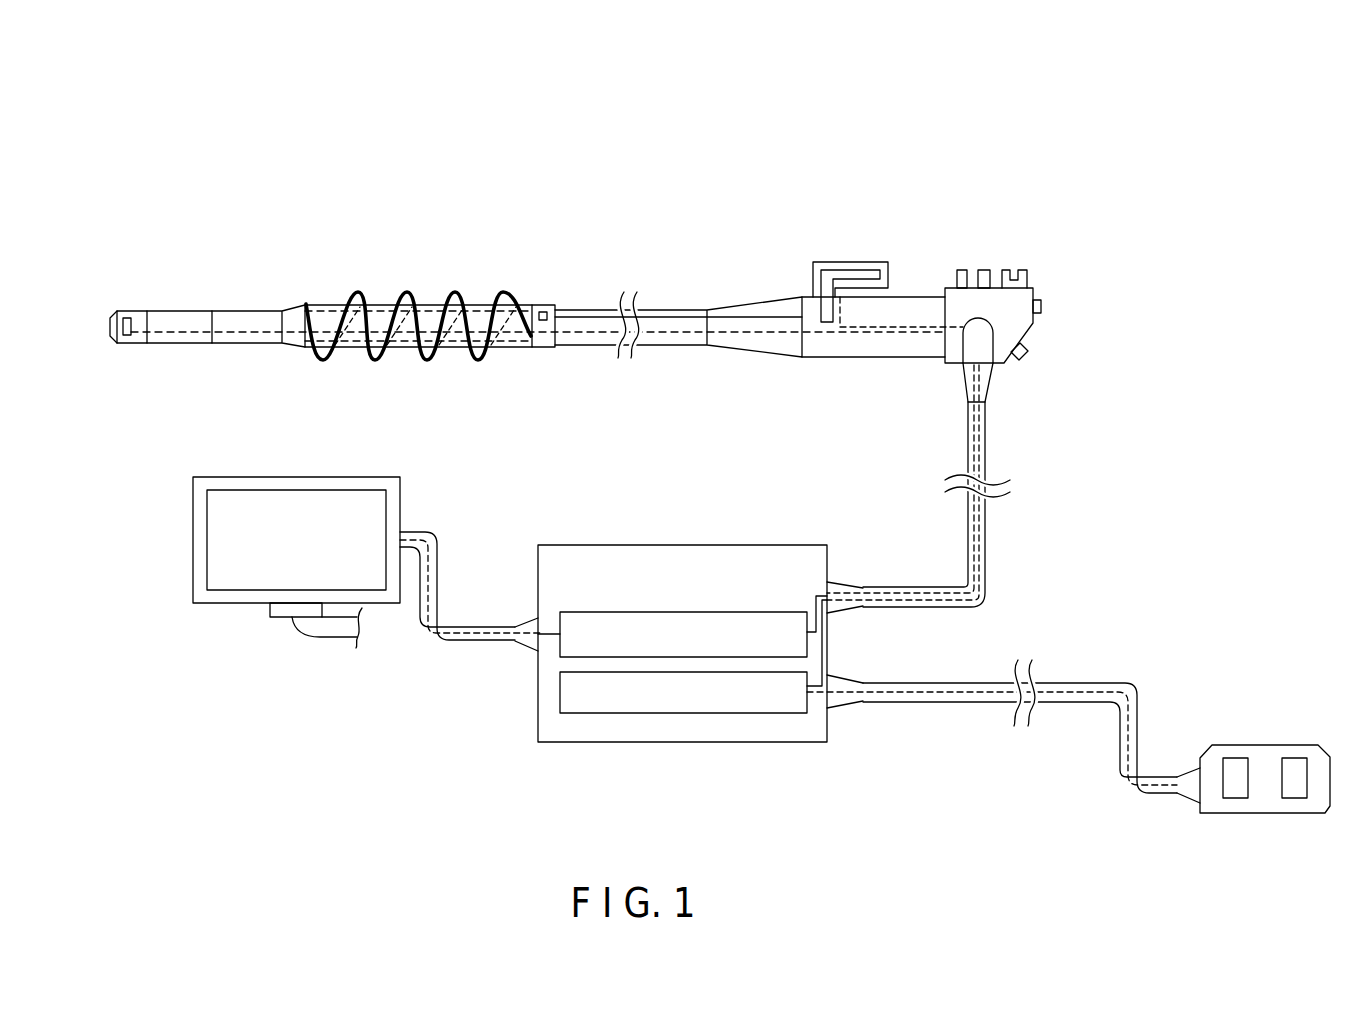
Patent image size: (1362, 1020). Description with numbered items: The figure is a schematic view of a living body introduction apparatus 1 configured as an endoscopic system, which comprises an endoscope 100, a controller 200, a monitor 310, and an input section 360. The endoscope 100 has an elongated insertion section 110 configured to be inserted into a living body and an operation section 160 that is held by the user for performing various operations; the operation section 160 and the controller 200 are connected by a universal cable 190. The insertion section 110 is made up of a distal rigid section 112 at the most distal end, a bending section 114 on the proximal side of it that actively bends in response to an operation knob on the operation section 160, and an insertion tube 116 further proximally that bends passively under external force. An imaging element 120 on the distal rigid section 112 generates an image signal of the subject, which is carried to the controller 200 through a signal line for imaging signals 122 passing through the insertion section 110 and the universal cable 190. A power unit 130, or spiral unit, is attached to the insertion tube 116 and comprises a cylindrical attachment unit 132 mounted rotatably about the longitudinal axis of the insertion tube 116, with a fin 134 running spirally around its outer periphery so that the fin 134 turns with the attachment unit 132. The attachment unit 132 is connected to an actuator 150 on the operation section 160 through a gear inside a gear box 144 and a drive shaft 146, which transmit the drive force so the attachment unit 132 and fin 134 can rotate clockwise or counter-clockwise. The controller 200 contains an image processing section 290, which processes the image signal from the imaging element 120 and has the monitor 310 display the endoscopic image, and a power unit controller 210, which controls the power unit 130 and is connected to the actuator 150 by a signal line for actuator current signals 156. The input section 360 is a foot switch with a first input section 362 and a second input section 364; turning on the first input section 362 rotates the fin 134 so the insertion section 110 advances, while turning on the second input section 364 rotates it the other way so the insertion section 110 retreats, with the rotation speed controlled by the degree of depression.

The living body introduction apparatus 1 is at (302, 728).
The endoscope 100 is at (1094, 160).
The insertion section 110 is at (652, 158).
The distal rigid section 112 is at (127, 345).
The bending section 114 is at (180, 345).
The insertion tube 116 is at (598, 347).
The imaging element 120 is at (131, 311).
The signal line for imaging signals 122 is at (578, 342).
The power unit 130 is at (455, 229).
The attachment unit 132 is at (328, 304).
The fin 134 is at (357, 290).
The gear box 144 is at (827, 270).
The drive shaft 146 is at (669, 314).
The actuator 150 is at (857, 274).
The signal line for actuator current signals 156 is at (899, 320).
The operation section 160 is at (985, 239).
The universal cable 190 is at (987, 538).
The controller 200 is at (686, 543).
The power unit controller 210 is at (677, 716).
The image processing section 290 is at (626, 611).
The monitor 310 is at (307, 476).
The input section 360 is at (1263, 744).
The first input section 362 is at (1295, 801).
The second input section 364 is at (1237, 801).